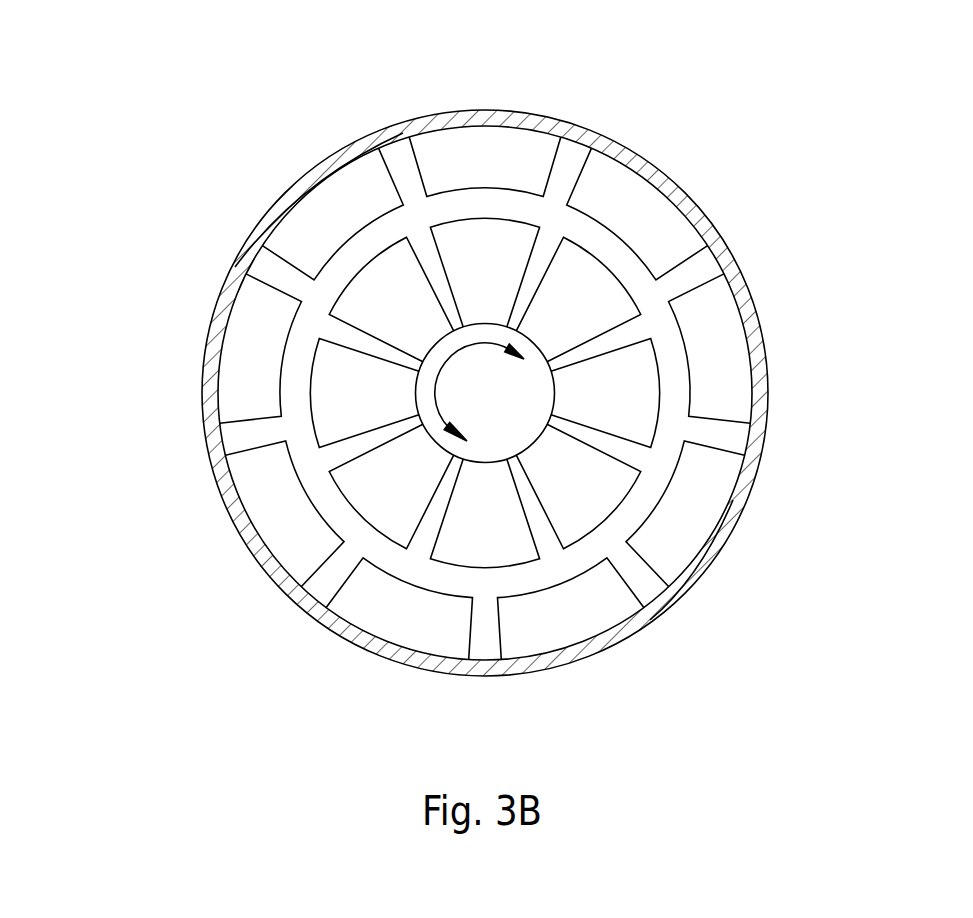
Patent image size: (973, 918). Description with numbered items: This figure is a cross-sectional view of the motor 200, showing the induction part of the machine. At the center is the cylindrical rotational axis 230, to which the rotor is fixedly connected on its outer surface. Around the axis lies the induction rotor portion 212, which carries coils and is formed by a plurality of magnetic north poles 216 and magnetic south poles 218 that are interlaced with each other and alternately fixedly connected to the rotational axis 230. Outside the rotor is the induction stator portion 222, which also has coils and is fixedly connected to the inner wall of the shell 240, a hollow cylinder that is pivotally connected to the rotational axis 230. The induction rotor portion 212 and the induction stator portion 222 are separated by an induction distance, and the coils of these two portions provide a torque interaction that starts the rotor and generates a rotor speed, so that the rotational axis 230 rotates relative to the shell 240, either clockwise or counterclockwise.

The motor 200 is at (300, 58).
The induction rotor portion 212 is at (632, 393).
The magnetic north poles 216 is at (590, 283).
The magnetic south poles 218 is at (630, 387).
The induction stator portion 222 is at (495, 150).
The rotational axis 230 is at (512, 407).
The shell 240 is at (583, 132).